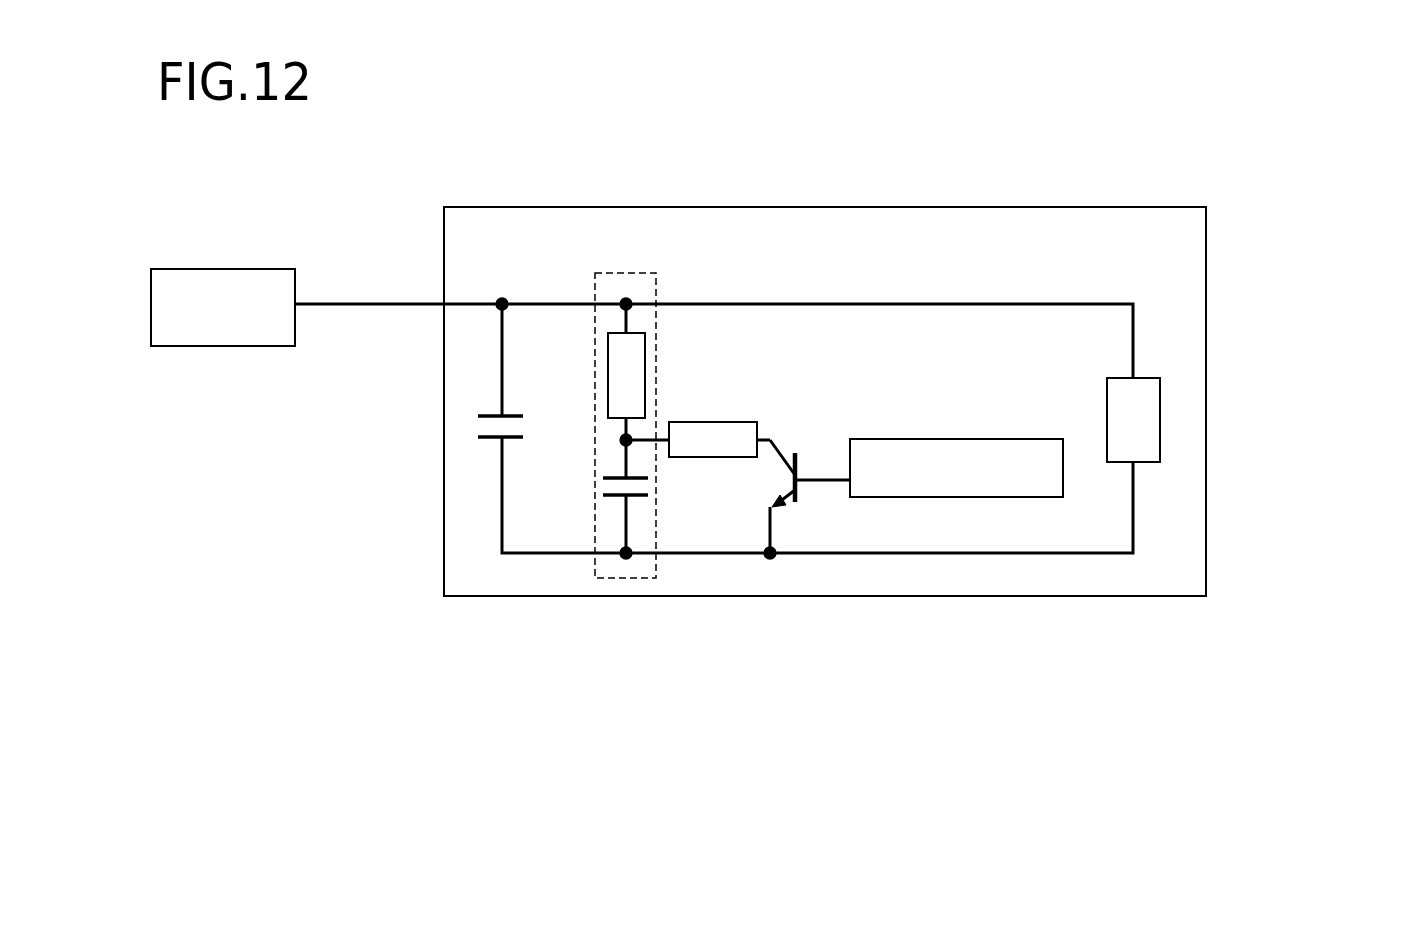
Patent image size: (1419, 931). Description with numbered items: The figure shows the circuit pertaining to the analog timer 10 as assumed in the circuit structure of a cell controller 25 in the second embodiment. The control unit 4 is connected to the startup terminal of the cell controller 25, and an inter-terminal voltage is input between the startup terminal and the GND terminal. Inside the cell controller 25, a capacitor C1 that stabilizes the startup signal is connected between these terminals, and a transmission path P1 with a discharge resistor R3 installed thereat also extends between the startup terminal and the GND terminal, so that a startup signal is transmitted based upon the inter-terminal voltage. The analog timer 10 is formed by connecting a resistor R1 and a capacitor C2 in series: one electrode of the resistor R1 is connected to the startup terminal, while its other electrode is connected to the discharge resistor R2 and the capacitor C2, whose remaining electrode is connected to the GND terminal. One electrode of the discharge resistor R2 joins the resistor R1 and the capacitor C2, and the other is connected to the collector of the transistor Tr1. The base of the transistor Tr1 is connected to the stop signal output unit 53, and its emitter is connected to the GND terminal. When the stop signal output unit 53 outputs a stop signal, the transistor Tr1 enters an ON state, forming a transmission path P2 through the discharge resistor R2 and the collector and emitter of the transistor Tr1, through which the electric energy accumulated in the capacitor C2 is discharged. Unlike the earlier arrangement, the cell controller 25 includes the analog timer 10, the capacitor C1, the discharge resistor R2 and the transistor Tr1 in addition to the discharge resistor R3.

The control unit 4 is at (223, 307).
The analog timer 10 is at (659, 345).
The cell controller 25 is at (825, 401).
The stop signal output unit 53 is at (956, 468).
The capacitor C1 is at (513, 425).
The capacitor C2 is at (626, 503).
The resistor R1 is at (626, 375).
The discharge resistor R2 is at (691, 439).
The discharge resistor R3 is at (1133, 420).
The transistor Tr1 is at (810, 485).
The transmission path P1 is at (1135, 327).
The transmission path P2 is at (768, 438).